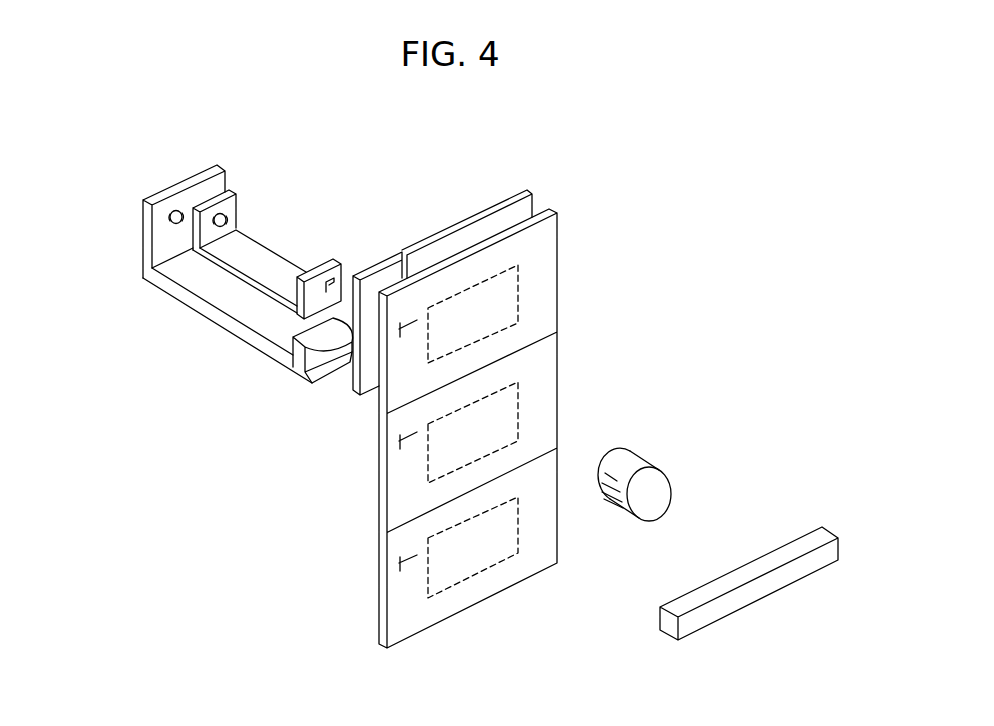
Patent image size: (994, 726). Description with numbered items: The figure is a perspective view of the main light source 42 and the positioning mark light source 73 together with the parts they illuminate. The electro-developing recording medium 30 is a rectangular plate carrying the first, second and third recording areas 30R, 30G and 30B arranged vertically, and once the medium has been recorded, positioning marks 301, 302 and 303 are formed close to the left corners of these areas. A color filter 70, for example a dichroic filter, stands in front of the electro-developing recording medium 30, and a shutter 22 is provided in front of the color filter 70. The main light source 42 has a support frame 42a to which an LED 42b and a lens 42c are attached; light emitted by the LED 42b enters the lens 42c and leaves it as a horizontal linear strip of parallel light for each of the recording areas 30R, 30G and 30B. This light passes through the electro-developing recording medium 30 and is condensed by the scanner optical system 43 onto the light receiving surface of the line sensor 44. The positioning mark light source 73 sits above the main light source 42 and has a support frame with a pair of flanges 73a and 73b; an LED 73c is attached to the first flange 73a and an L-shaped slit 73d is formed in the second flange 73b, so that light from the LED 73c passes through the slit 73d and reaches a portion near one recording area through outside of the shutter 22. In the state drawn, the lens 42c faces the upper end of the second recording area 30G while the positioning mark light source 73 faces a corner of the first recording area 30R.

The shutter 22 is at (376, 271).
The electro-developing recording medium 30 is at (461, 434).
The first recording area 30R is at (512, 300).
The second recording area 30G is at (512, 418).
The third recording area 30B is at (478, 560).
The positioning mark 301 is at (398, 332).
The positioning mark 302 is at (398, 442).
The positioning mark 303 is at (398, 562).
The main light source 42 is at (207, 295).
The support frame 42a is at (215, 322).
The LED 42b is at (169, 217).
The lens 42c is at (303, 352).
The scanner optical system 43 is at (664, 487).
The line sensor 44 is at (779, 557).
The color filter 70 is at (487, 214).
The positioning mark light source 73 is at (267, 220).
The first flange 73a is at (237, 200).
The second flange 73b is at (336, 262).
The LED 73c is at (216, 214).
The L-shaped slit 73d is at (308, 253).